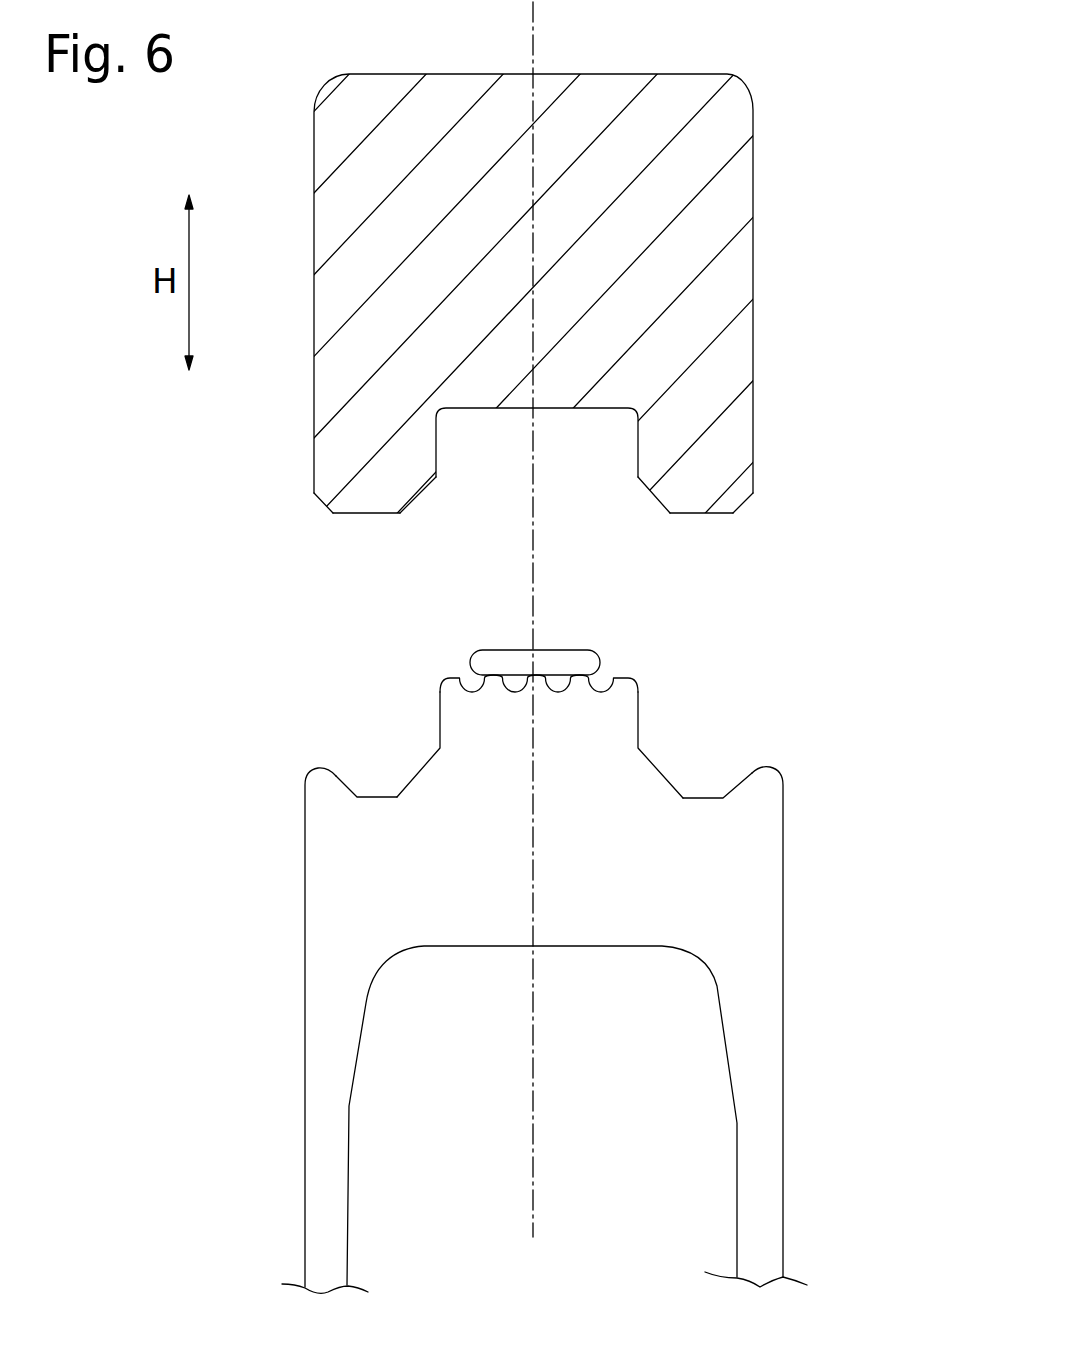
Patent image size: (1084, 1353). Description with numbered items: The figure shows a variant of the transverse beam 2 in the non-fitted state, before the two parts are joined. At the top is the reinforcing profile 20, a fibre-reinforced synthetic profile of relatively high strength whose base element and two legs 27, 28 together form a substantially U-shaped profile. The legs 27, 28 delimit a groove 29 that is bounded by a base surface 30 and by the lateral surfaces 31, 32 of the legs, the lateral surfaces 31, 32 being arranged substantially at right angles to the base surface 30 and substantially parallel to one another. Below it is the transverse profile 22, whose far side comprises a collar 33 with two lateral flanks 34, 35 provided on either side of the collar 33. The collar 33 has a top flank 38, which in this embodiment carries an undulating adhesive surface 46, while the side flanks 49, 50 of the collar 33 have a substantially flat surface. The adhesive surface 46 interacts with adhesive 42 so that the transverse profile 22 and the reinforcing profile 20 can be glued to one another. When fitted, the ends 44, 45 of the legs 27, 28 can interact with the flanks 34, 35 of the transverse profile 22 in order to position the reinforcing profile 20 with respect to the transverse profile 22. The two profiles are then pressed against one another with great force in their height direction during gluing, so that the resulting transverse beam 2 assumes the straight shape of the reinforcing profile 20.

The transverse beam 2 is at (792, 292).
The reinforcing profile 20 is at (668, 103).
The transverse profile 22 is at (758, 1180).
The leg 27 is at (340, 460).
The leg 28 is at (720, 440).
The groove 29 is at (510, 488).
The base surface 30 is at (548, 410).
The lateral surface 31 is at (437, 447).
The lateral surface 32 is at (638, 442).
The collar 33 is at (567, 752).
The lateral flank 34 is at (373, 798).
The lateral flank 35 is at (703, 800).
The top flank 38 is at (466, 672).
The adhesive 42 is at (541, 663).
The end of leg 44 is at (368, 517).
The end of leg 45 is at (703, 515).
The adhesive surface 46 is at (517, 697).
The side flank 49 is at (437, 727).
The side flank 50 is at (638, 718).